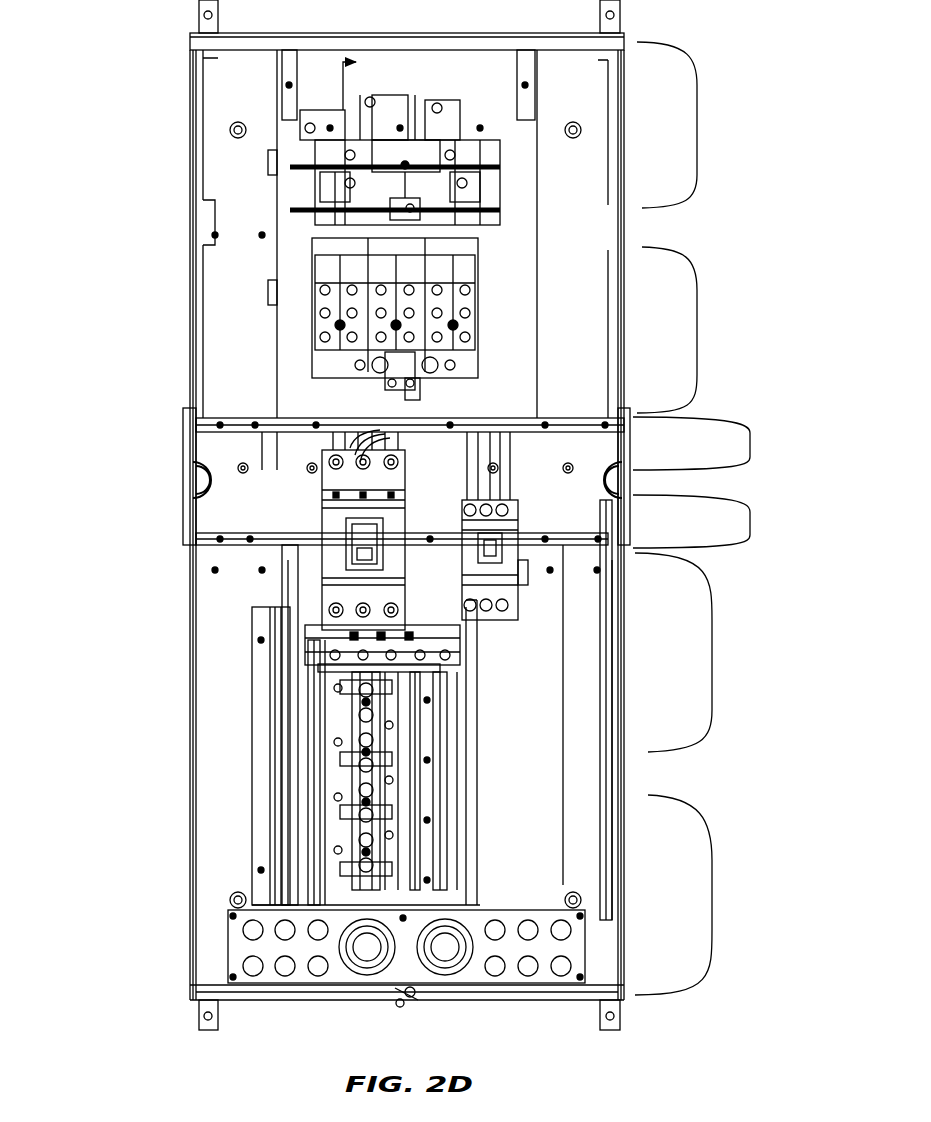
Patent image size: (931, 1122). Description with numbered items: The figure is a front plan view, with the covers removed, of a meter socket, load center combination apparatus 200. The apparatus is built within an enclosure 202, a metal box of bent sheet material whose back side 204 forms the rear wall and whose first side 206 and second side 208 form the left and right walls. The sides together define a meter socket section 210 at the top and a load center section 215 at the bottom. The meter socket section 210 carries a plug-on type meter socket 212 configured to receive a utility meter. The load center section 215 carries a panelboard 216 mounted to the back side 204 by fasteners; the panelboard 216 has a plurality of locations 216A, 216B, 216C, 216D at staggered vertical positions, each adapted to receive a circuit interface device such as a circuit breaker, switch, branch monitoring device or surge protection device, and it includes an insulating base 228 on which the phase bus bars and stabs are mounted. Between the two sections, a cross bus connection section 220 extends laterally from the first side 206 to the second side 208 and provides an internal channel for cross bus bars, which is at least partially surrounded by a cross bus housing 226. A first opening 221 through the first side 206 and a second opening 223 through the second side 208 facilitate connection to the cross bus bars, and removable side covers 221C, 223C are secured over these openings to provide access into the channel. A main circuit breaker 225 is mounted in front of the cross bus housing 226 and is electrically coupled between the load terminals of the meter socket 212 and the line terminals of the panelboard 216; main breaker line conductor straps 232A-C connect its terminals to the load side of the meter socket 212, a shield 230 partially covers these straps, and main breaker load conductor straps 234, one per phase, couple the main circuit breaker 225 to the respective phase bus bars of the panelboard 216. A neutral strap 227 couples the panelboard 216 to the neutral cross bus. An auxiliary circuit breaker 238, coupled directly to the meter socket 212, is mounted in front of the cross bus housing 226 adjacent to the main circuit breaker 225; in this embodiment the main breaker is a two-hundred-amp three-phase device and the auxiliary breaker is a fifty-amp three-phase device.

The meter socket, load center combination apparatus 200 is at (155, 163).
The enclosure 202 is at (190, 107).
The back side 204 is at (237, 320).
The first side 206 is at (190, 942).
The second side 208 is at (623, 610).
The meter socket section 210 is at (642, 208).
The meter socket 212 is at (277, 192).
The load center section 215 is at (648, 750).
The panelboard 216 is at (252, 647).
The breaker slot A 216A is at (352, 703).
The breaker slot B 216B is at (350, 760).
The breaker slot C 216C is at (348, 812).
The breaker slot D 216D is at (355, 872).
The cross bus connection section 220 is at (650, 475).
The first opening 221 is at (192, 477).
The removable side cover 221C is at (183, 445).
The second opening 223 is at (622, 483).
The removable side cover 223C is at (631, 436).
The main circuit breaker 225 is at (322, 522).
The cross bus housing 226 is at (275, 462).
The neutral strap 227 is at (290, 602).
The base 228 is at (392, 753).
The shield 230 is at (290, 372).
The main breaker line conductor straps 232A-C is at (350, 440).
The main breaker load conductor straps 234 is at (397, 636).
The auxiliary circuit breaker 238 is at (518, 530).